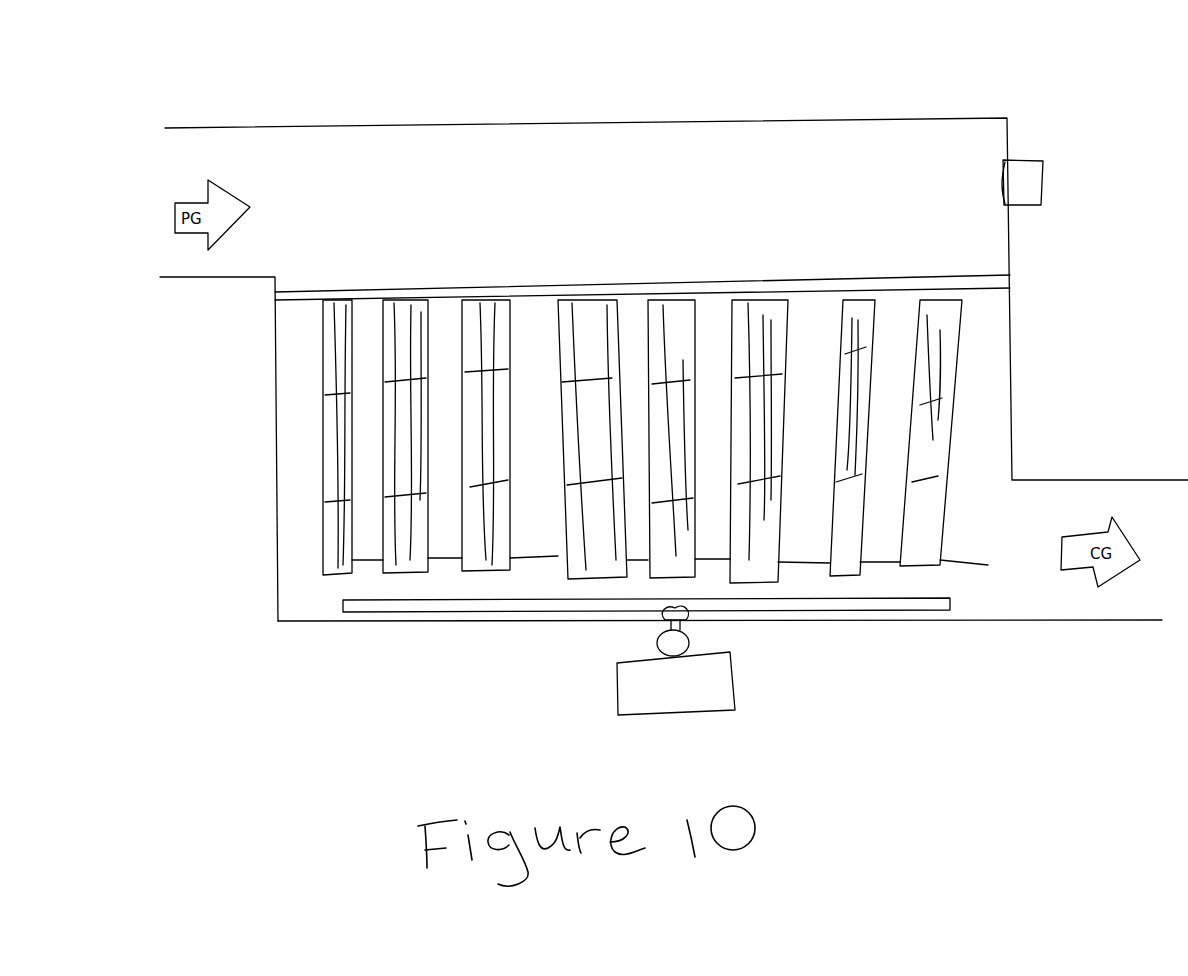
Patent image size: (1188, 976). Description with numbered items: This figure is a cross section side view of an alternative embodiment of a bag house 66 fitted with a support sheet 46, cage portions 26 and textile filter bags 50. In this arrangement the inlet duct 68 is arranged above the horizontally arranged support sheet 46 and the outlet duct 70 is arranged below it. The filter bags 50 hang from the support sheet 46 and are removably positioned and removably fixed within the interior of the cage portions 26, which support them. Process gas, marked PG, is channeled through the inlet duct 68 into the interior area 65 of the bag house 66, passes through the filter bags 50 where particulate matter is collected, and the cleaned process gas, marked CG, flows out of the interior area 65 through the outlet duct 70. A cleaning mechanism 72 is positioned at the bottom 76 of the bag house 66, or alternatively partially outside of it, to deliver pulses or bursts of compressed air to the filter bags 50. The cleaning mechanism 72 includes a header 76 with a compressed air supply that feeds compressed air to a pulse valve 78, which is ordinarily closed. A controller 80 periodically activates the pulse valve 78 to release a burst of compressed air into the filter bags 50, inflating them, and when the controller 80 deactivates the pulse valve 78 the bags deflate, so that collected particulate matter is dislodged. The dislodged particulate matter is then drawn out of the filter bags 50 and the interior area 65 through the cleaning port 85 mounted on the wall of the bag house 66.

The cage portions 26 is at (330, 443).
The support sheet 46 is at (988, 273).
The textile filter bags 50 is at (955, 368).
The interior area 65 is at (718, 165).
The bag house 66 is at (888, 118).
The inlet duct 68 is at (180, 282).
The outlet duct 70 is at (280, 588).
The cleaning mechanism 72 is at (665, 698).
The header 76 is at (403, 603).
The pulse valve 78 is at (668, 618).
The controller 80 is at (689, 640).
The cleaning port 85 is at (1027, 160).